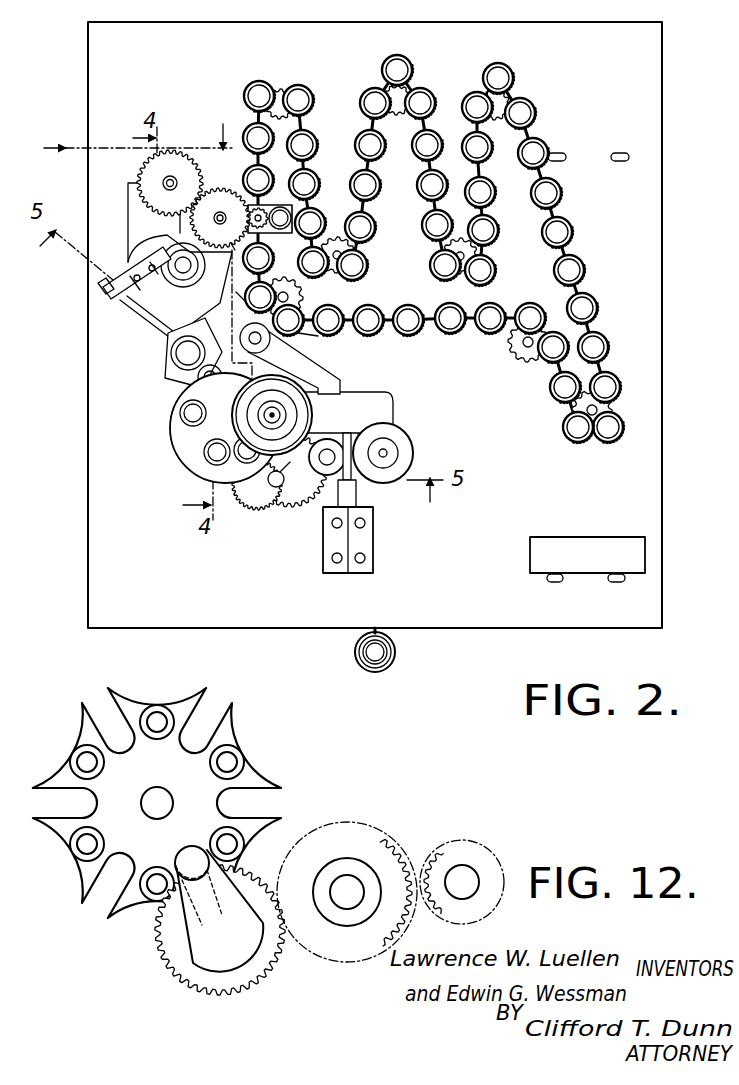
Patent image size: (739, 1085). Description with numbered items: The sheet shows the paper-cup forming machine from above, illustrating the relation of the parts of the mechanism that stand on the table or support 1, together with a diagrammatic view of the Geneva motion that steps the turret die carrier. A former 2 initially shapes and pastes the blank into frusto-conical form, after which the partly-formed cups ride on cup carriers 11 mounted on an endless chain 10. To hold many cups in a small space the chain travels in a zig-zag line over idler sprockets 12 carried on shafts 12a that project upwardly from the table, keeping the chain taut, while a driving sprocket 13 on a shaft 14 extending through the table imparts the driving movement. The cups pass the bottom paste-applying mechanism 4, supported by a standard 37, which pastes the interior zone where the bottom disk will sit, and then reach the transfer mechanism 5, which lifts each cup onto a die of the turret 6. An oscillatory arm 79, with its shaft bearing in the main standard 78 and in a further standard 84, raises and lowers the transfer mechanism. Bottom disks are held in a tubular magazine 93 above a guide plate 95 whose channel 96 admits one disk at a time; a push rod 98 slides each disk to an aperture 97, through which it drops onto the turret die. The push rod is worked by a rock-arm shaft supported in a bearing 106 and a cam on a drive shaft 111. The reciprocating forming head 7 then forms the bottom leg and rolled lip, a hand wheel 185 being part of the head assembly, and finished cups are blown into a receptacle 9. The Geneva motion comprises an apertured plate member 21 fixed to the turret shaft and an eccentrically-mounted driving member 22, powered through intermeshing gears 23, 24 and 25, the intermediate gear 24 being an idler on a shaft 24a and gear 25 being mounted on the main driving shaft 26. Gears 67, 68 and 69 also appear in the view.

In FIG. 2, the table or support 1 is at (643, 187).
In FIG. 2, the former 2 is at (645, 553).
In FIG. 2, the bottom paste-applying mechanism 4 is at (293, 207).
In FIG. 2, the transfer mechanism 5 is at (236, 297).
In FIG. 2, the turret 6 is at (188, 442).
In FIG. 2, the reciprocating forming head 7 is at (135, 143).
In FIG. 2, the receptacle 9 is at (378, 673).
In FIG. 2, the endless chain 10 is at (528, 135).
In FIG. 2, the cup carriers 11 is at (466, 100).
In FIG. 2, the idler sprockets 12 is at (397, 122).
In FIG. 2, the shafts 12a is at (282, 86).
In FIG. 2, the driving sprocket 13 is at (301, 297).
In FIG. 2, the shaft 14 is at (307, 328).
In FIG. 12, the apertured plate member 21 is at (82, 888).
In FIG. 12, the eccentrically-mounted driving member 22 is at (198, 890).
In FIG. 2, the gear 23 is at (256, 501).
In FIG. 12, the gear 23 is at (217, 998).
In FIG. 2, the intermediate gear 24 is at (327, 491).
In FIG. 12, the intermediate gear 24 is at (313, 827).
In FIG. 12, the shaft 24a is at (346, 888).
In FIG. 12, the gear 25 is at (440, 836).
In FIG. 12, the main driving shaft 26 is at (463, 881).
In FIG. 2, the standard 37 is at (140, 217).
In FIG. 2, the pinion 67 is at (252, 207).
In FIG. 2, the gear 68 is at (170, 163).
In FIG. 2, the gear 69 is at (213, 193).
In FIG. 2, the main standard 78 is at (333, 401).
In FIG. 2, the oscillatory arm 79 is at (313, 371).
In FIG. 2, the standard 84 is at (372, 508).
In FIG. 2, the tubular magazine 93 is at (193, 347).
In FIG. 2, the guide plate 95 is at (190, 343).
In FIG. 2, the channel 96 is at (198, 377).
In FIG. 2, the aperture 97 is at (207, 383).
In FIG. 2, the push rod 98 is at (137, 307).
In FIG. 2, the bearing 106 is at (123, 273).
In FIG. 2, the drive shaft 111 is at (183, 262).
In FIG. 2, the hand wheel 185 is at (277, 482).